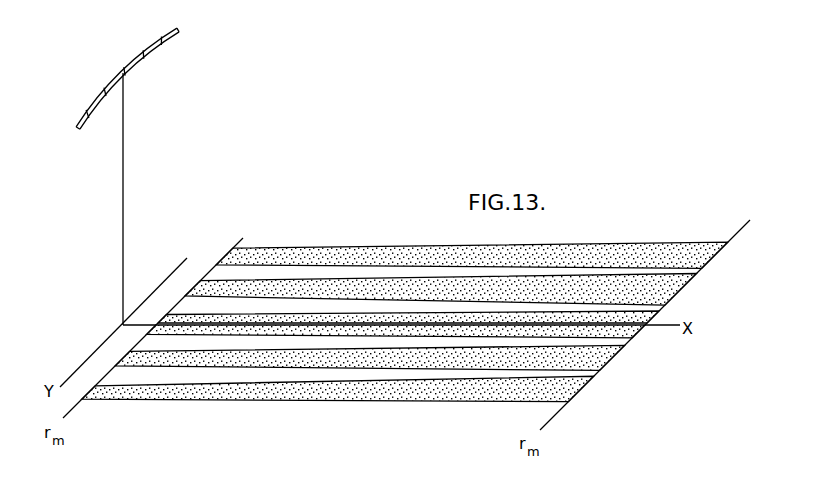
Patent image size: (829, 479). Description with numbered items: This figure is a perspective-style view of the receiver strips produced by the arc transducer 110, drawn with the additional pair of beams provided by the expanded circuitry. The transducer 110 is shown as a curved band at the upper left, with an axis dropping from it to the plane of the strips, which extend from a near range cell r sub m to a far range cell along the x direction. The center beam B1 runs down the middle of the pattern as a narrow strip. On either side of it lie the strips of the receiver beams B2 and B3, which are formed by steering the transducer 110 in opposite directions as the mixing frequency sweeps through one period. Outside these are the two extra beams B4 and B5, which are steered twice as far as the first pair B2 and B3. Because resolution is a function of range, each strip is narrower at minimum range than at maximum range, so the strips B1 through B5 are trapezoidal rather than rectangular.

The arc transducer 110 is at (123, 66).
The center beam B1 is at (633, 332).
The receiver beam B2 is at (668, 296).
The receiver beam B3 is at (599, 356).
The additional beam B4 is at (698, 255).
The additional beam B5 is at (560, 385).